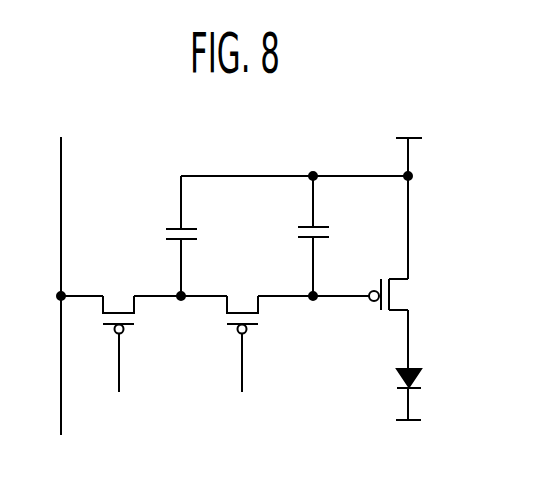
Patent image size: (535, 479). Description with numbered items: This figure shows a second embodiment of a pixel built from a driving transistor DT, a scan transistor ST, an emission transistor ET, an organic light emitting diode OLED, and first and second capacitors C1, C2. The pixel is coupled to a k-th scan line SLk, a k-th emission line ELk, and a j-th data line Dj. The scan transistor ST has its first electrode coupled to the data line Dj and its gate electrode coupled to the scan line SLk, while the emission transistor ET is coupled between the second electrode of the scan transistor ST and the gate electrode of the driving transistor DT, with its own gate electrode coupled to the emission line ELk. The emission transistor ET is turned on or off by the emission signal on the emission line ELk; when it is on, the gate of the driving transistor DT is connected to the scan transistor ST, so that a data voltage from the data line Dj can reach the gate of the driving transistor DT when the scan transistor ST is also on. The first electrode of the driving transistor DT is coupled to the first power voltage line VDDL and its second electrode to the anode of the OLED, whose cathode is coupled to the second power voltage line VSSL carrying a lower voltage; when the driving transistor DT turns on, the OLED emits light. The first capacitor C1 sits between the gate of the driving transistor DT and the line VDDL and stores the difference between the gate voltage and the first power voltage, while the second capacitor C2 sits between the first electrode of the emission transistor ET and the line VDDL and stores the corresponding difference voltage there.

The j-th data line Dj is at (61, 271).
The scan transistor ST is at (118, 301).
The emission transistor ET is at (242, 301).
The k-th scan line SLk is at (116, 380).
The k-th emission line ELk is at (240, 380).
The first capacitor C1 is at (326, 236).
The second capacitor C2 is at (195, 238).
The driving transistor DT is at (401, 324).
The organic light emitting diode OLED is at (434, 392).
The first power voltage line VDDL is at (409, 193).
The second power voltage line VSSL is at (408, 439).